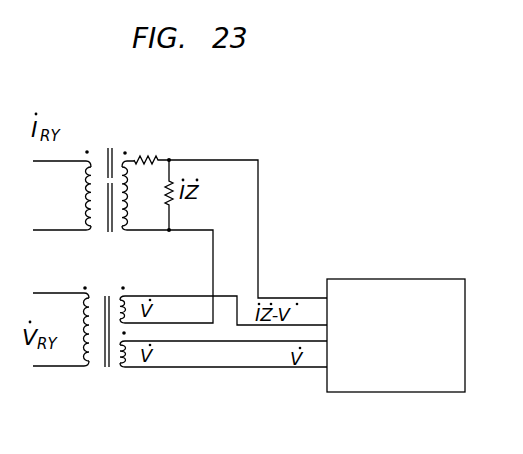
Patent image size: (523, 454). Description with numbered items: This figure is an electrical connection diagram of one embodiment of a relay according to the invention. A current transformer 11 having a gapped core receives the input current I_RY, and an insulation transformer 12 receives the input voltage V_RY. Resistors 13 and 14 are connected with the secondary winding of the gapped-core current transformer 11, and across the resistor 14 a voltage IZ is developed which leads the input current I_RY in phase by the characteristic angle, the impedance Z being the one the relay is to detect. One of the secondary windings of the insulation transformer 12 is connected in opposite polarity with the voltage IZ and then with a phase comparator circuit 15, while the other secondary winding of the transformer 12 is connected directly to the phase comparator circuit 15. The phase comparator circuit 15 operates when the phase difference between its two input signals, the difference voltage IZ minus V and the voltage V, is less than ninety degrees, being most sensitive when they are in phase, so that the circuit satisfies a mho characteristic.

The current transformer 11 is at (111, 147).
The insulation transformer 12 is at (111, 296).
The resistor 13 is at (138, 157).
The resistor 14 is at (162, 186).
The phase comparator circuit 15 is at (388, 279).